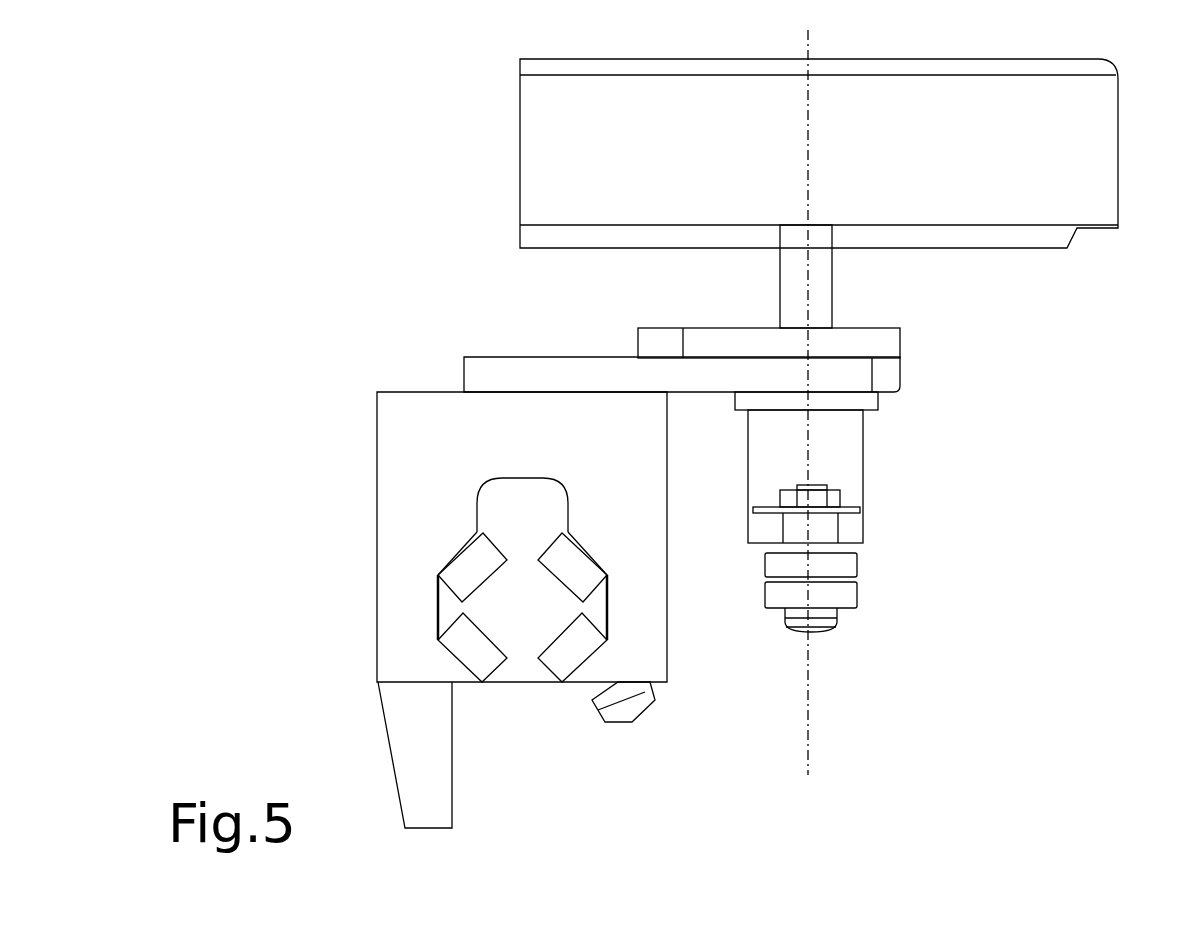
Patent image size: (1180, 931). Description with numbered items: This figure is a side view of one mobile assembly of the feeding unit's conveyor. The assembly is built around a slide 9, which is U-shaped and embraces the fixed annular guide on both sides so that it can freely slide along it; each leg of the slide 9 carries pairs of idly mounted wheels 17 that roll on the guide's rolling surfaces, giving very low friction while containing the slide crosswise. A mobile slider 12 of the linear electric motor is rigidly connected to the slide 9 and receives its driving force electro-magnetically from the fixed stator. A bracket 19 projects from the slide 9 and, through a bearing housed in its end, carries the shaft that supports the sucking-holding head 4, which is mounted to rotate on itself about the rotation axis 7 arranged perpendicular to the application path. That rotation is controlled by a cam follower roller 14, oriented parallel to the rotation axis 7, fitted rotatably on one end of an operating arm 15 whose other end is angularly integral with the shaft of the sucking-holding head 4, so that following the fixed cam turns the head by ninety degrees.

The sucking-holding head 4 is at (1092, 143).
The rotation axis 7 is at (808, 708).
The slide 9 is at (412, 413).
The mobile slider 12 is at (413, 732).
The cam follower roller 14 is at (830, 600).
The operating arm 15 is at (825, 528).
The wheels 17 is at (482, 660).
The bracket 19 is at (573, 377).